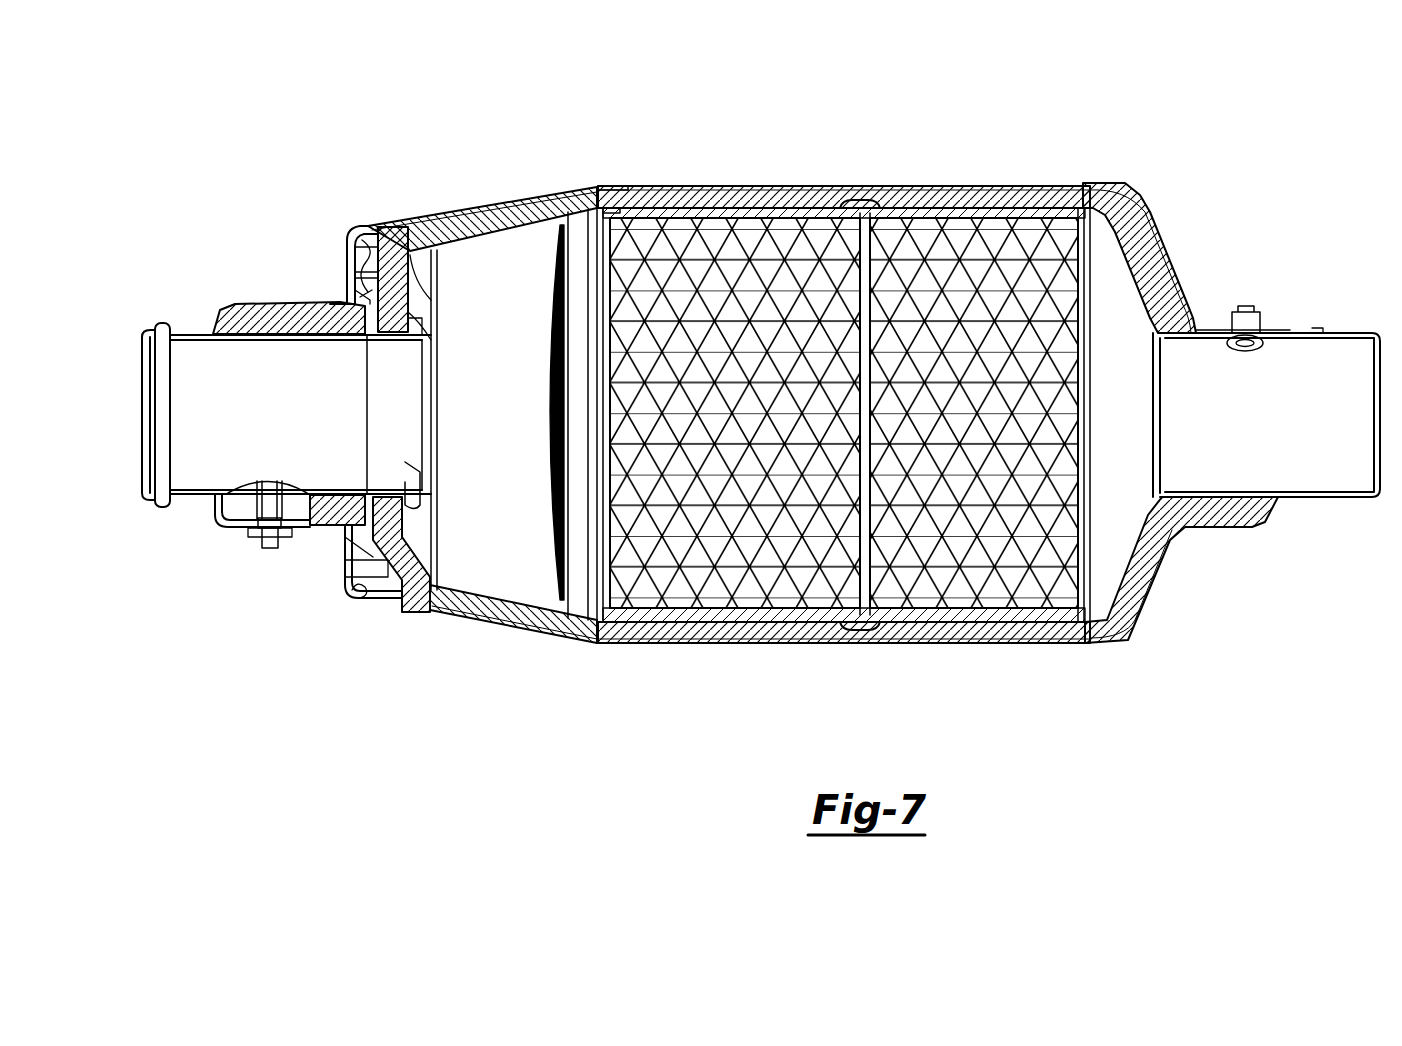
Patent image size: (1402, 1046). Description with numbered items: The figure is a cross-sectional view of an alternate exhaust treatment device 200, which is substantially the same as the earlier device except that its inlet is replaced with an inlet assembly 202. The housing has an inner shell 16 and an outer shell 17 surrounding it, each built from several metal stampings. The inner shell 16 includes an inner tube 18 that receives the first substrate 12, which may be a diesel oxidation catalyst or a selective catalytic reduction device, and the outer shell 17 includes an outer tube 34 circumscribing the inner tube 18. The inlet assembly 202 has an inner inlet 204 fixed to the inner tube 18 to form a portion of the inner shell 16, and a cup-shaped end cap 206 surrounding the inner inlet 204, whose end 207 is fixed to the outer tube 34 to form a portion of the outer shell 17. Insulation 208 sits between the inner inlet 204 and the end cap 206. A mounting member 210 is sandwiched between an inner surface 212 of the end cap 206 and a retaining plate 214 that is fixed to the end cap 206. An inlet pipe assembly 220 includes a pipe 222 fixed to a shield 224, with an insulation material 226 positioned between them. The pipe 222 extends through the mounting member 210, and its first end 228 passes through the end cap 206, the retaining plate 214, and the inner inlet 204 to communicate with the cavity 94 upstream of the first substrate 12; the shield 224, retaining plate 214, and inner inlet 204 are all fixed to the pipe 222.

The exhaust treatment device 200 is at (822, 165).
The first substrate 12 is at (783, 592).
The inner shell 16 is at (498, 604).
The outer shell 17 is at (538, 642).
The inner tube 18 is at (680, 612).
The outer tube 34 is at (700, 186).
The cavity 94 is at (506, 416).
The inlet assembly 202 is at (502, 190).
The inner inlet 204 is at (495, 240).
The end cap 206 is at (344, 240).
The end 207 is at (607, 182).
The insulation 208 is at (483, 210).
The mounting member 210 is at (358, 272).
The inner surface 212 is at (343, 583).
The retaining plate 214 is at (366, 262).
The inlet pipe assembly 220 is at (148, 318).
The pipe 222 is at (152, 509).
The shield 224 is at (218, 316).
The insulation material 226 is at (267, 327).
The first end 228 is at (422, 510).